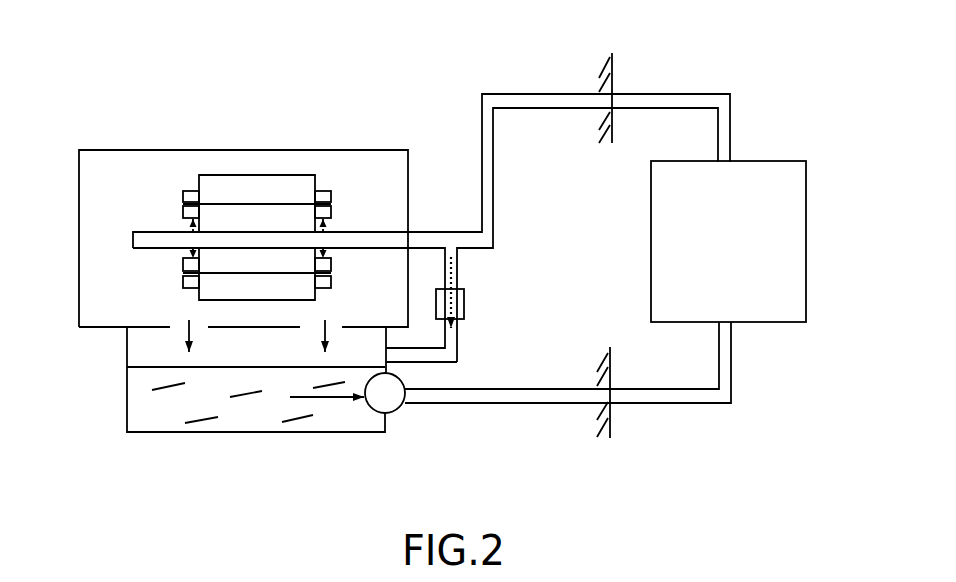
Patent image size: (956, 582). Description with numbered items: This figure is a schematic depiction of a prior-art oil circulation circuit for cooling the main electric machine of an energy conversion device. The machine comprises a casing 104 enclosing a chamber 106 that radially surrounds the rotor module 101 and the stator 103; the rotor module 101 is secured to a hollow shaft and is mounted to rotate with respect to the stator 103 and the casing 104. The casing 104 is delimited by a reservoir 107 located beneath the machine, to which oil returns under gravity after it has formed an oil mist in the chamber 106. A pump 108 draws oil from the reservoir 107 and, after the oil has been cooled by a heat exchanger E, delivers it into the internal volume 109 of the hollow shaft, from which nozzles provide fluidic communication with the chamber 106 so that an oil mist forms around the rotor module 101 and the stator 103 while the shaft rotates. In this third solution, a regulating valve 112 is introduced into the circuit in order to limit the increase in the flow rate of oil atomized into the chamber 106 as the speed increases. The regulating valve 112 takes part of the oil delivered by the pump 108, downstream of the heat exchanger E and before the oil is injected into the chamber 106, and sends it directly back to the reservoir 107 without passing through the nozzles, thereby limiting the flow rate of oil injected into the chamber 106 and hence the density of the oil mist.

The casing 104 is at (107, 150).
The chamber 106 is at (348, 177).
The stator 103 is at (231, 189).
The rotor module 101 is at (267, 220).
The internal volume of the hollow shaft 109 is at (133, 237).
The reservoir 107 is at (142, 403).
The pump 108 is at (397, 412).
The regulating valve 112 is at (464, 302).
The heat exchanger E is at (806, 220).